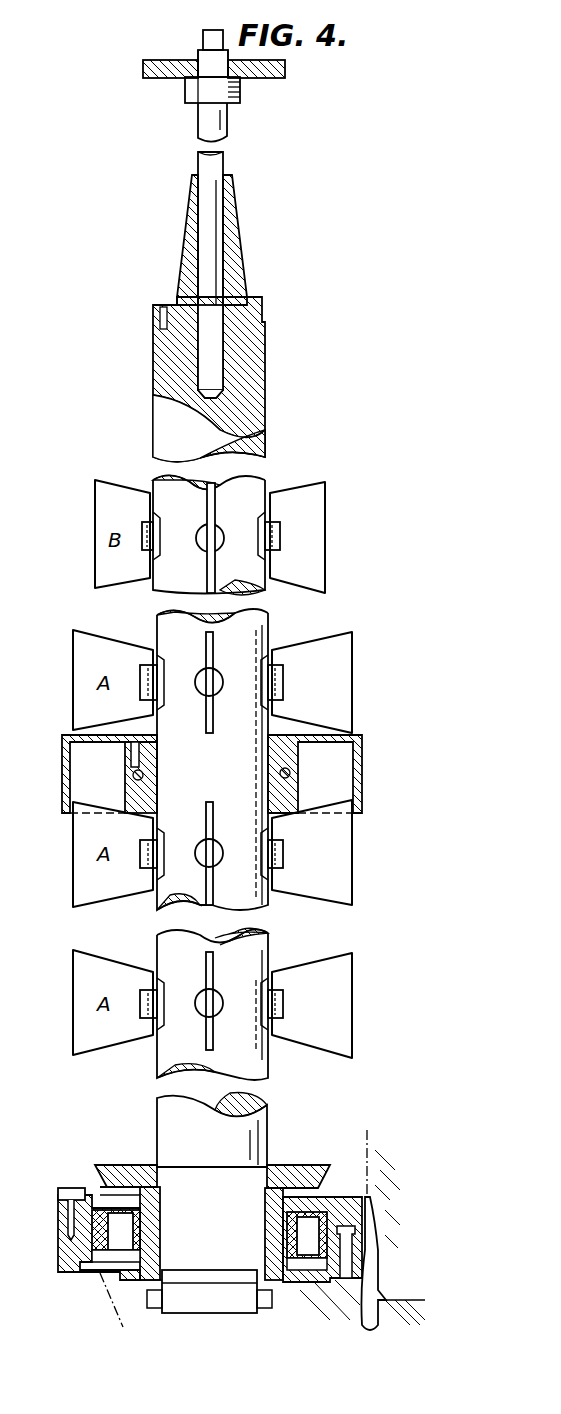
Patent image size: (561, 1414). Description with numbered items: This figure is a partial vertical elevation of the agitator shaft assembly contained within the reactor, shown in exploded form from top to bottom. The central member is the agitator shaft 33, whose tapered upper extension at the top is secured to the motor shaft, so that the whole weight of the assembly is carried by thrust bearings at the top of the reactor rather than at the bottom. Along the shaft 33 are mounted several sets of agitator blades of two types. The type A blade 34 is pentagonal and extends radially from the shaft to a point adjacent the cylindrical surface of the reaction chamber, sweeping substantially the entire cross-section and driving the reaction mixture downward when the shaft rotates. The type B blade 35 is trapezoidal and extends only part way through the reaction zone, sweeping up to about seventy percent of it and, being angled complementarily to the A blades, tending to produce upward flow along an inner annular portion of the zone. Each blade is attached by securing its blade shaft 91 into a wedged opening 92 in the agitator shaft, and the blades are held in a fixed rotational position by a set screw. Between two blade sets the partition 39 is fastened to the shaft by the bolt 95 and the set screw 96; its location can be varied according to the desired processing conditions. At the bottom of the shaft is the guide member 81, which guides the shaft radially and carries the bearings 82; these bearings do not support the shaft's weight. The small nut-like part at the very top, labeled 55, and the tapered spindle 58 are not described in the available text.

The nut 55 is at (243, 95).
The tapered spindle 58 is at (210, 236).
The agitator shaft 33 is at (267, 392).
The wedged opening in the shaft 92 is at (253, 495).
The blade shaft 91 is at (283, 522).
The type B agitator blade 35 is at (310, 556).
The type A agitator blade 34 is at (324, 690).
The partition 39 is at (348, 733).
The set screw 96 is at (131, 752).
The bolt 95 is at (132, 778).
The guide member 81 is at (320, 1203).
The bearings 82 is at (307, 1240).